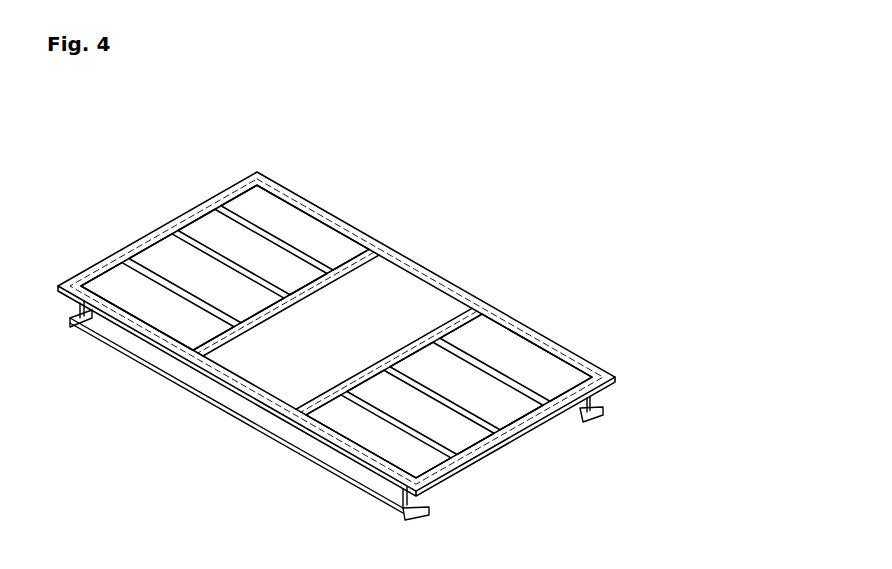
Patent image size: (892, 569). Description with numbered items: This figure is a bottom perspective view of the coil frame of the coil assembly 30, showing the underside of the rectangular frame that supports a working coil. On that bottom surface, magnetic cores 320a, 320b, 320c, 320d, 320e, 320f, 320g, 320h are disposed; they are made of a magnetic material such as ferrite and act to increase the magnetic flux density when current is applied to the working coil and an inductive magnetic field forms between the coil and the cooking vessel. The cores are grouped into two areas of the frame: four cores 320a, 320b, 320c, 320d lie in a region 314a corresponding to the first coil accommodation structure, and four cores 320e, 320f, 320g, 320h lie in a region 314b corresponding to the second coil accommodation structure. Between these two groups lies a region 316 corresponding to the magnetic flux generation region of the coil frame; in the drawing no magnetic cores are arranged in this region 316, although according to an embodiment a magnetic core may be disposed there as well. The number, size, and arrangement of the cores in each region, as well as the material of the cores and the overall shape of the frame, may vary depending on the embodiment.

The coil assembly 30 is at (370, 175).
The region corresponding to the first coil accommodation structure 314a is at (132, 323).
The region corresponding to the second coil accommodation structure 314b is at (360, 455).
The region corresponding to the magnetic flux generation region 316 is at (237, 386).
The magnetic core 320a is at (103, 280).
The magnetic core 320b is at (150, 253).
The magnetic core 320c is at (198, 226).
The magnetic core 320d is at (245, 200).
The magnetic core 320e is at (427, 457).
The magnetic core 320f is at (475, 433).
The magnetic core 320g is at (522, 407).
The magnetic core 320h is at (568, 380).